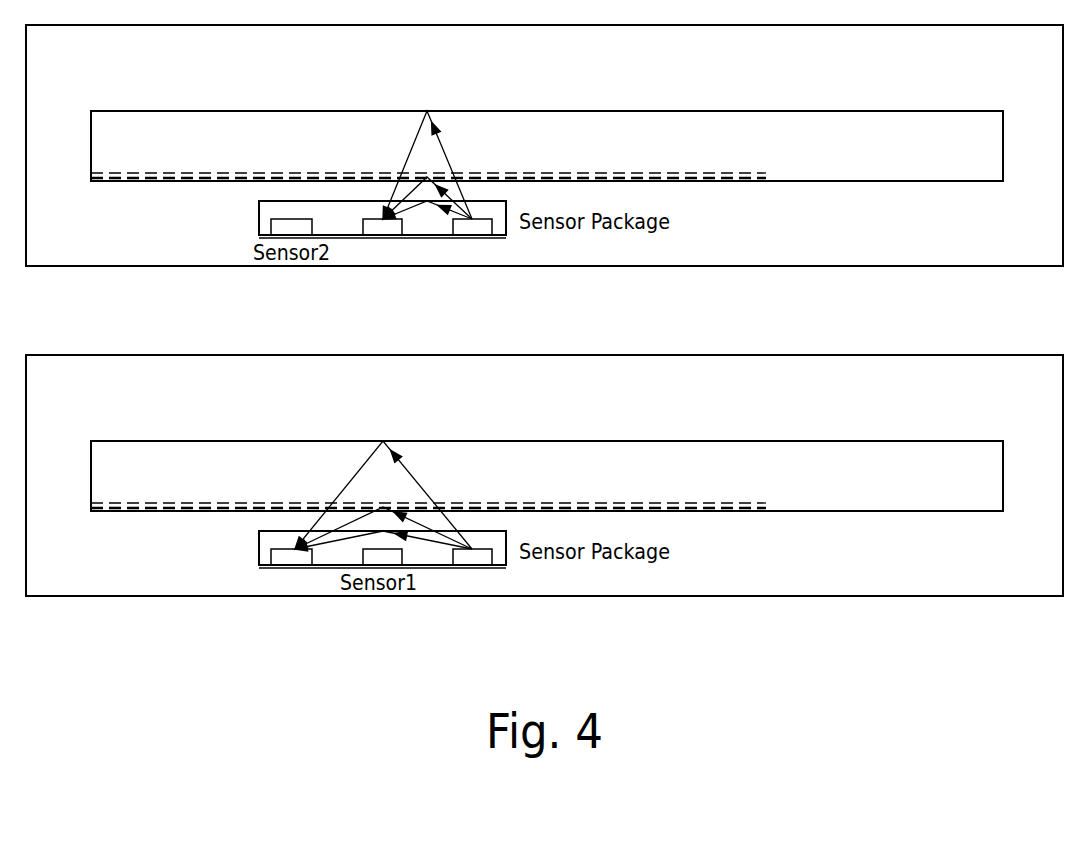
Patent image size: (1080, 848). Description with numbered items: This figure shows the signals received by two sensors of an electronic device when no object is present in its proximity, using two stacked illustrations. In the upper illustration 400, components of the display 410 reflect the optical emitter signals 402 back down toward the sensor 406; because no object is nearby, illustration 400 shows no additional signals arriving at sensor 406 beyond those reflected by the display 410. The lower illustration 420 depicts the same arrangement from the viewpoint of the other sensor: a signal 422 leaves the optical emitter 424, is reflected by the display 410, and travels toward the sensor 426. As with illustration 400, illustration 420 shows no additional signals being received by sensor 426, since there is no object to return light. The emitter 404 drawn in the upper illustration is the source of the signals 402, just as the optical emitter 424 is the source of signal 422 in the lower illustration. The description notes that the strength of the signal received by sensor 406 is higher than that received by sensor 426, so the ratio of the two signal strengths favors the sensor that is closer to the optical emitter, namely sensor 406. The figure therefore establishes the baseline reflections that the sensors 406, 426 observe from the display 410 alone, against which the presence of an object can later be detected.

The illustration 400 is at (570, 62).
The optical emitter signals 402 is at (400, 131).
The emitter 404 is at (490, 274).
The sensor 406 is at (389, 273).
The display 410 is at (754, 103).
The illustration 420 is at (570, 393).
The signal 422 is at (359, 460).
The optical emitter 424 is at (489, 603).
The sensor 426 is at (297, 602).